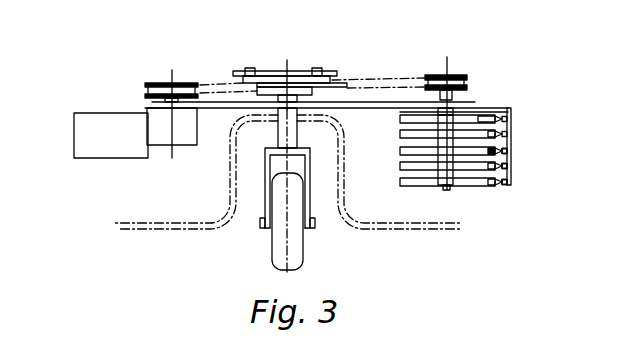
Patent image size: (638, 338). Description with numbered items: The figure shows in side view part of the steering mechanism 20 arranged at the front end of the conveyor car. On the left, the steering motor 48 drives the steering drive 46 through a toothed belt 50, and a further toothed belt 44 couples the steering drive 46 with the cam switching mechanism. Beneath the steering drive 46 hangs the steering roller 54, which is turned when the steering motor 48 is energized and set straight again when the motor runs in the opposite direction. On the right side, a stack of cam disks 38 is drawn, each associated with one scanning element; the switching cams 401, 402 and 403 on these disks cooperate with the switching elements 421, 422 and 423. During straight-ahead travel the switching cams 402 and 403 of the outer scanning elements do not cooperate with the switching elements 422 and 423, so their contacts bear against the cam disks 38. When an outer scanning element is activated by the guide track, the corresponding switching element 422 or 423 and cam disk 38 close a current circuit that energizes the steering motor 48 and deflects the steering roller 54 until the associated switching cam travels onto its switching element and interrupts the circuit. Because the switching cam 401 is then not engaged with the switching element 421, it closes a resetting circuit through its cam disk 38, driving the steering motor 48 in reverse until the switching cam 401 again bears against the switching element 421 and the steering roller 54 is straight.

The steering mechanism 20 is at (301, 137).
The cam disk 38 is at (470, 169).
The switching cam 401 is at (494, 152).
The switching cam 402 is at (483, 187).
The switching cam 403 is at (490, 168).
The switching element 421 is at (511, 150).
The switching element 422 is at (511, 132).
The switching element 423 is at (510, 113).
The toothed belt 44 is at (390, 80).
The steering drive 46 is at (323, 52).
The steering motor 48 is at (88, 148).
The toothed belt 50 is at (203, 85).
The steering roller 54 is at (296, 256).